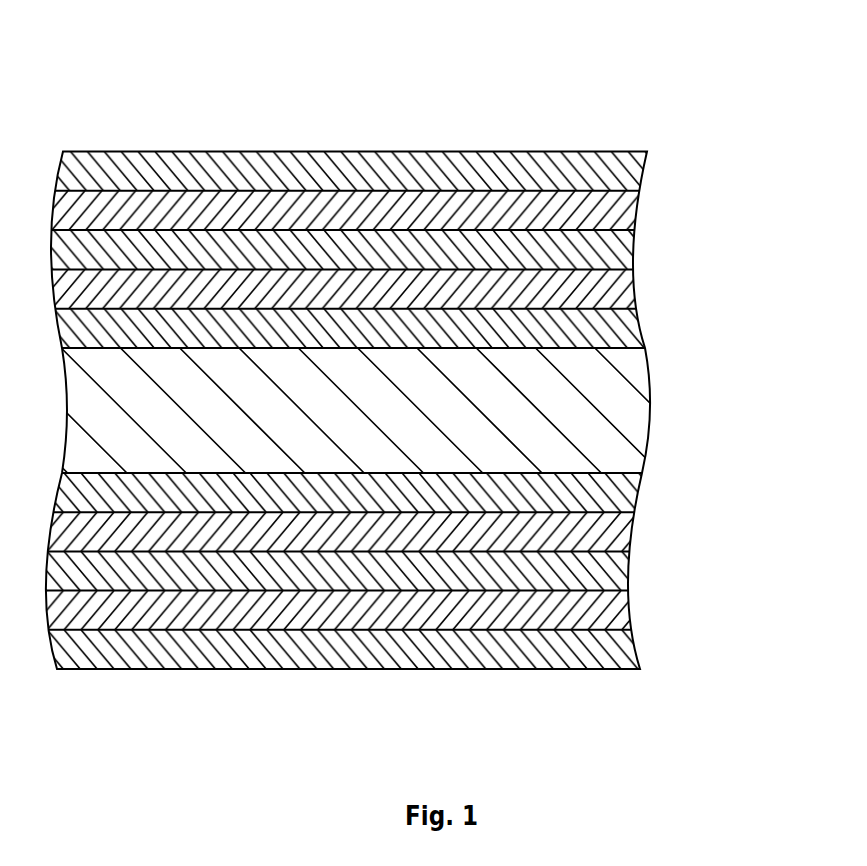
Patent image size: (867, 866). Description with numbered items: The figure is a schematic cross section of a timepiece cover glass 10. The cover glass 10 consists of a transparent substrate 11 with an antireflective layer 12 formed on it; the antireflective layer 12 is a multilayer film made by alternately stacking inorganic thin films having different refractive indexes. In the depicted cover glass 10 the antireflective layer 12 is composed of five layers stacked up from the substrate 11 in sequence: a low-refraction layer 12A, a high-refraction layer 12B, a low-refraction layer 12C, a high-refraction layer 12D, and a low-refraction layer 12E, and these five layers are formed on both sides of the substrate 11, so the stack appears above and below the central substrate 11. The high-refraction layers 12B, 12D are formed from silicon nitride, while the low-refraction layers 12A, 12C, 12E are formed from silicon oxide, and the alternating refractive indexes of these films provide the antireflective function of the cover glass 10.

The timepiece cover glass 10 is at (495, 94).
The transparent substrate 11 is at (650, 388).
The antireflective layer 12 is at (723, 157).
The low-refraction layer 12A is at (643, 330).
The high-refraction layer 12B is at (636, 289).
The low-refraction layer 12C is at (632, 247).
The high-refraction layer 12D is at (635, 209).
The low-refraction layer 12E is at (646, 171).